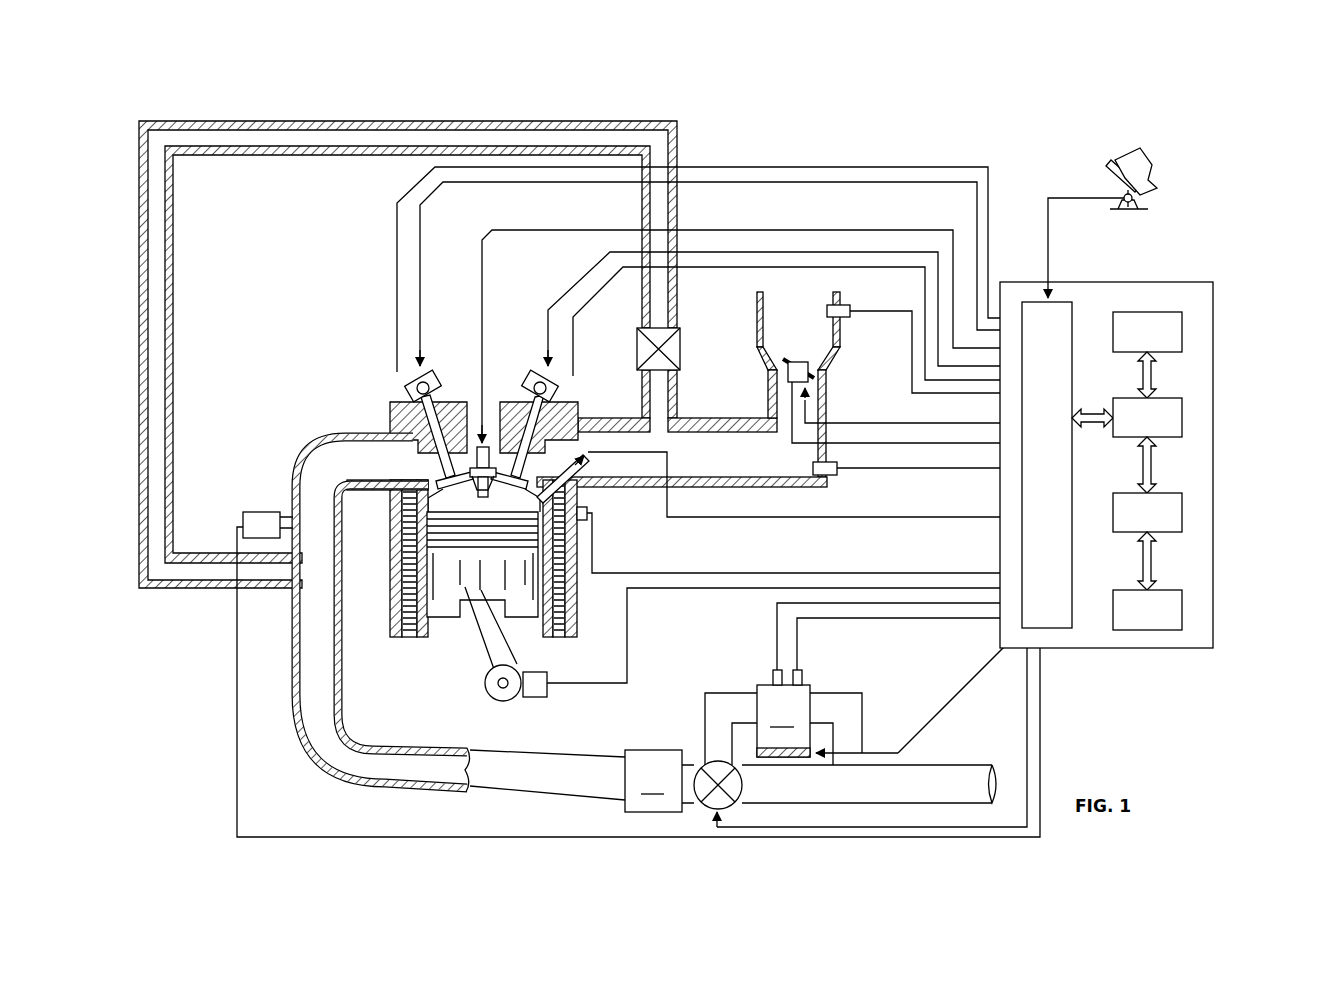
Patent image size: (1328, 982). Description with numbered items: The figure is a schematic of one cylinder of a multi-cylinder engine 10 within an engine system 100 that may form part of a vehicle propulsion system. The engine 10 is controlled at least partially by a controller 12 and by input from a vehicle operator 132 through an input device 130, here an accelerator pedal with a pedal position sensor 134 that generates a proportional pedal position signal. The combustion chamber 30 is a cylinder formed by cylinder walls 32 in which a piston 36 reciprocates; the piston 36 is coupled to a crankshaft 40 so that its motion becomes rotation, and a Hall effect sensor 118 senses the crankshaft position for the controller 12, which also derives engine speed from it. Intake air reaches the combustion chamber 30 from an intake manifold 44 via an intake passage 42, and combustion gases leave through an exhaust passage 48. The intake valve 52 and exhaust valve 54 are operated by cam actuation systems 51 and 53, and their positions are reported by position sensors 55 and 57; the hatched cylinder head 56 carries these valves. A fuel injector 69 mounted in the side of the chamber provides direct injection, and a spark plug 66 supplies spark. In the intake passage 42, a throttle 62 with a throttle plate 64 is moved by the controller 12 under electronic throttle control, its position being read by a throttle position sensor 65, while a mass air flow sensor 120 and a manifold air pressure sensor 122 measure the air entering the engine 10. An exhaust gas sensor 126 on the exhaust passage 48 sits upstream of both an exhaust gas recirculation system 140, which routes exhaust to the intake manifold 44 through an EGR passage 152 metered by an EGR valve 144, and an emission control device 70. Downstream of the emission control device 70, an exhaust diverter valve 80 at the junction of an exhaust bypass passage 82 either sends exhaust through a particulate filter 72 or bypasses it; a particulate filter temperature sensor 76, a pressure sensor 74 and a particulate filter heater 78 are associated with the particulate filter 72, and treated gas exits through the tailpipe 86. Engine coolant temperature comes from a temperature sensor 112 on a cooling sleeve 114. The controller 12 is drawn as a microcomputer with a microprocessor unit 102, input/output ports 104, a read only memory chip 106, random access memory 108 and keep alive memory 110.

The engine 10 is at (330, 356).
The controller 12 is at (1212, 283).
The combustion chamber 30 is at (398, 590).
The cylinder walls 32 is at (430, 630).
The piston 36 is at (467, 588).
The crankshaft 40 is at (492, 697).
The intake passage 42 is at (805, 331).
The intake manifold 44 is at (745, 463).
The exhaust passage 48 is at (366, 469).
The cam actuation system 51 is at (535, 372).
The intake valve 52 is at (779, 483).
The cam actuation system 53 is at (430, 372).
The exhaust valve 54 is at (440, 482).
The position sensor 55 is at (556, 388).
The cylinder head 56 is at (534, 442).
The position sensor 57 is at (408, 386).
The throttle 62 is at (815, 370).
The throttle plate 64 is at (780, 366).
The throttle position sensor 65 is at (788, 380).
The spark plug 66 is at (480, 440).
The fuel injector 69 is at (588, 497).
The emission control device 70 is at (653, 781).
The particulate filter 72 is at (783, 721).
The pressure sensor 74 is at (802, 668).
The particulate filter temperature sensor 76 is at (774, 668).
The particulate filter heater 78 is at (800, 750).
The exhaust diverter valve 80 is at (714, 760).
The exhaust bypass passage 82 is at (728, 702).
The tailpipe 86 is at (995, 762).
The engine system 100 is at (1247, 97).
The microprocessor unit 102 is at (1182, 418).
The input/output ports 104 is at (1072, 310).
The read only memory chip 106 is at (1182, 324).
The random access memory 108 is at (1182, 510).
The keep alive memory 110 is at (1182, 606).
The temperature sensor 112 is at (588, 520).
The cooling sleeve 114 is at (566, 594).
The Hall effect sensor 118 is at (540, 697).
The mass air flow sensor 120 is at (845, 305).
The manifold air pressure sensor 122 is at (834, 475).
The exhaust gas sensor 126 is at (240, 514).
The input device 130 is at (1108, 166).
The vehicle operator 132 is at (1157, 166).
The pedal position sensor 134 is at (1148, 205).
The exhaust gas recirculation system 140 is at (548, 106).
The EGR valve 144 is at (680, 350).
The EGR passage 152 is at (400, 121).